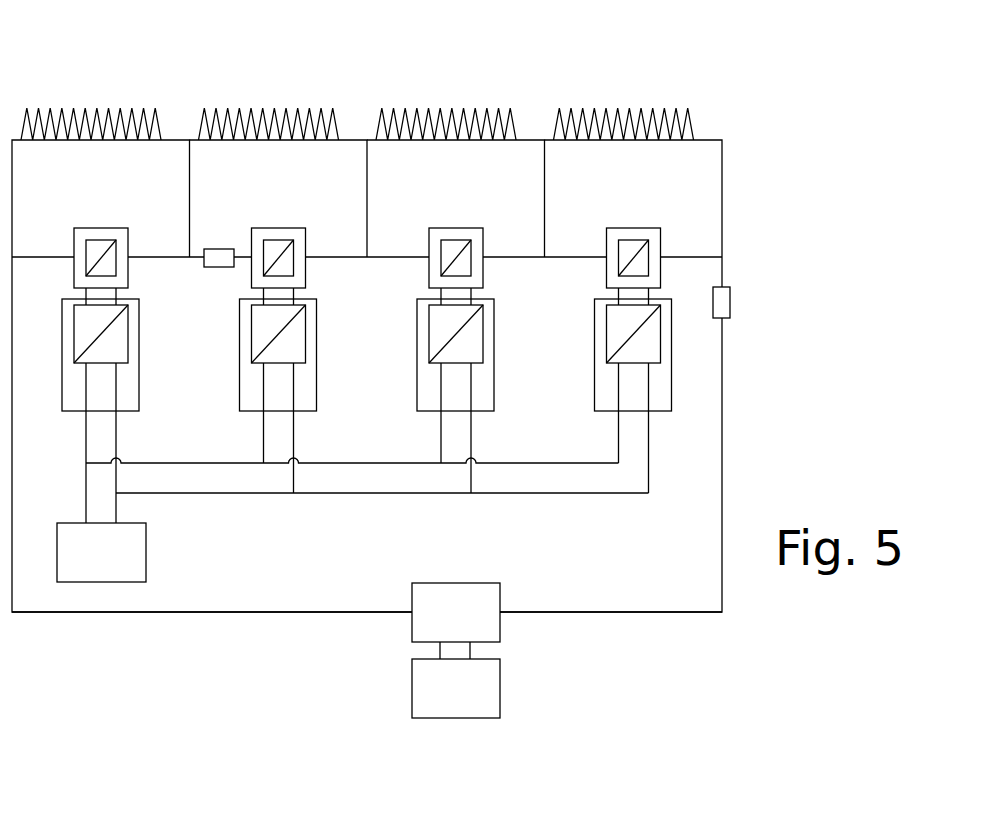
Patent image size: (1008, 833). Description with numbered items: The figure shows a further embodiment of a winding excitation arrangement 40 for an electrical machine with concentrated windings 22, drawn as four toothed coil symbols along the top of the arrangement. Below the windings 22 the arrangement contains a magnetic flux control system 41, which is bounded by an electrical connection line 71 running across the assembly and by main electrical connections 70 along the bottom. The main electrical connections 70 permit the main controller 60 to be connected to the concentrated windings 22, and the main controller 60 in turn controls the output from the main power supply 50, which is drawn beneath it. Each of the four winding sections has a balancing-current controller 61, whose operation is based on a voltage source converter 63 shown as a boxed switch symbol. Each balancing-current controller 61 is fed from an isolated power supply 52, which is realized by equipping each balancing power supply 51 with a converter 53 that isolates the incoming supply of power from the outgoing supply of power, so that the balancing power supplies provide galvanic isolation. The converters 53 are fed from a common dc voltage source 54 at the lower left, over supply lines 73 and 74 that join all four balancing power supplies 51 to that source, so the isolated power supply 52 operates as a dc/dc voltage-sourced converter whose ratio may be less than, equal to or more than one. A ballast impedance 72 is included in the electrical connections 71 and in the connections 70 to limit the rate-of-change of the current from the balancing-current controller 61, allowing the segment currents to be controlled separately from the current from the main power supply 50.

The concentrated windings 22 is at (68, 116).
The winding excitation arrangement 40 is at (765, 86).
The magnetic flux control system 41 is at (764, 246).
The main power supply 50 is at (458, 698).
The balancing power supply 51 is at (136, 388).
The isolated power supply 52 is at (133, 348).
The converter 53 is at (128, 316).
The dc voltage source 54 is at (102, 563).
The main controller 60 is at (500, 630).
The balancing-current controller 61 is at (130, 272).
The voltage source converter 63 is at (93, 253).
The main electrical connections 70 is at (323, 613).
The electrical connections 71 is at (156, 258).
The ballast impedance 72 is at (223, 256).
The supply line 73 is at (86, 478).
The return bus 74 is at (214, 498).